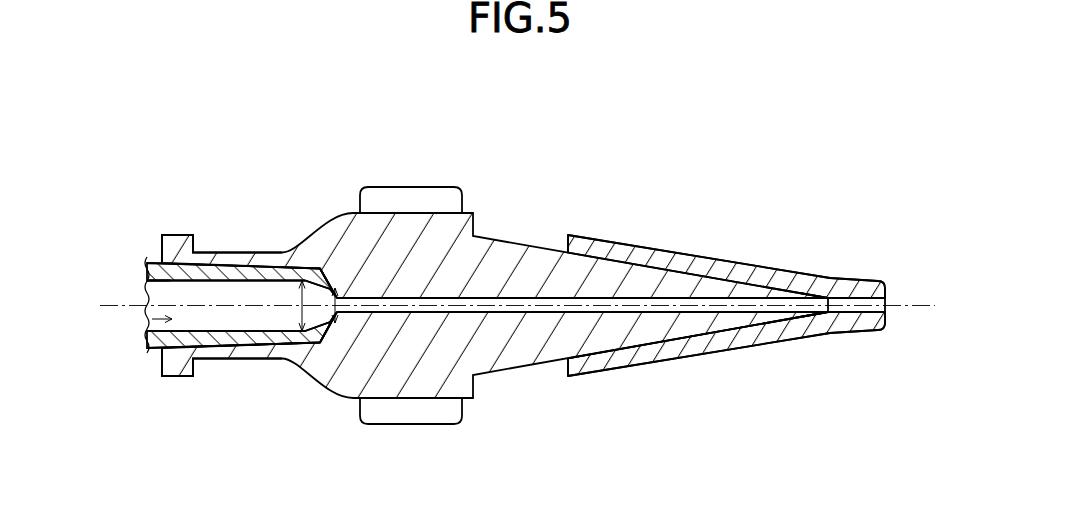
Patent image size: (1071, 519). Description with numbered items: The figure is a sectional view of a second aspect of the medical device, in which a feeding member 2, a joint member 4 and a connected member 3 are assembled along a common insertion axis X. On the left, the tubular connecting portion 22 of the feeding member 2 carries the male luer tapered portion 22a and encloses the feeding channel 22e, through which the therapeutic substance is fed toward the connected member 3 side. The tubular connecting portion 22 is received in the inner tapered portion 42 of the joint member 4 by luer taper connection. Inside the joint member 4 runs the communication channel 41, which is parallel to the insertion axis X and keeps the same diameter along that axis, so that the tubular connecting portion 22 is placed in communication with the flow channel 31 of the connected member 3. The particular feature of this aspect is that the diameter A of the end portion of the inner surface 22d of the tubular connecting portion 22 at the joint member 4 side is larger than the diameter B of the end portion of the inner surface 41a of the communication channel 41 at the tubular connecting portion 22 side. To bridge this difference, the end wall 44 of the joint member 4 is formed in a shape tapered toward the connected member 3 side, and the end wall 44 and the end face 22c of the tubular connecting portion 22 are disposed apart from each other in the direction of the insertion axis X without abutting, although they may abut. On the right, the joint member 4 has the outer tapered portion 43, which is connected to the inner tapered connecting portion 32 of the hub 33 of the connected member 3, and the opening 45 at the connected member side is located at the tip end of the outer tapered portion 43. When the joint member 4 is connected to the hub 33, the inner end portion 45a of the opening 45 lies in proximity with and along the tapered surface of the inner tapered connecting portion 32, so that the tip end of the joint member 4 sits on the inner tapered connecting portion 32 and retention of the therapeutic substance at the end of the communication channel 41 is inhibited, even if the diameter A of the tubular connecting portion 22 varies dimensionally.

The feeding member 2 is at (155, 255).
The tubular connecting portion 22 is at (172, 346).
The male luer tapered portion 22a is at (213, 346).
The end face 22c is at (317, 333).
The inner surface 22d is at (262, 345).
The feeding channel 22e is at (143, 322).
The connected member 3 is at (834, 276).
The flow channel 31 is at (887, 305).
The inner tapered connecting portion 32 is at (748, 322).
The hub 33 is at (693, 347).
The joint member 4 is at (487, 232).
The communication channel 41 is at (443, 302).
The inner surface 41a is at (382, 298).
The inner tapered portion 42 is at (215, 252).
The outer tapered portion 43 is at (680, 270).
The end wall 44 is at (327, 333).
The opening 45 is at (833, 313).
The inner end portion 45a is at (832, 278).
The diameter A is at (302, 280).
The diameter B is at (335, 288).
The insertion axis X is at (125, 305).